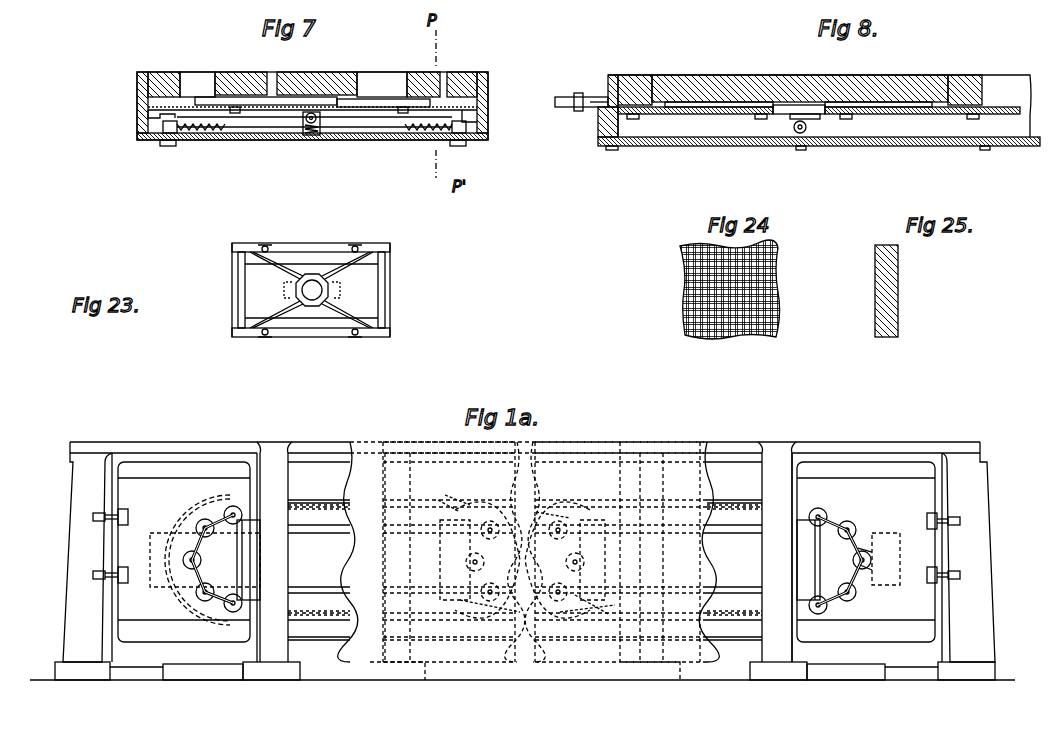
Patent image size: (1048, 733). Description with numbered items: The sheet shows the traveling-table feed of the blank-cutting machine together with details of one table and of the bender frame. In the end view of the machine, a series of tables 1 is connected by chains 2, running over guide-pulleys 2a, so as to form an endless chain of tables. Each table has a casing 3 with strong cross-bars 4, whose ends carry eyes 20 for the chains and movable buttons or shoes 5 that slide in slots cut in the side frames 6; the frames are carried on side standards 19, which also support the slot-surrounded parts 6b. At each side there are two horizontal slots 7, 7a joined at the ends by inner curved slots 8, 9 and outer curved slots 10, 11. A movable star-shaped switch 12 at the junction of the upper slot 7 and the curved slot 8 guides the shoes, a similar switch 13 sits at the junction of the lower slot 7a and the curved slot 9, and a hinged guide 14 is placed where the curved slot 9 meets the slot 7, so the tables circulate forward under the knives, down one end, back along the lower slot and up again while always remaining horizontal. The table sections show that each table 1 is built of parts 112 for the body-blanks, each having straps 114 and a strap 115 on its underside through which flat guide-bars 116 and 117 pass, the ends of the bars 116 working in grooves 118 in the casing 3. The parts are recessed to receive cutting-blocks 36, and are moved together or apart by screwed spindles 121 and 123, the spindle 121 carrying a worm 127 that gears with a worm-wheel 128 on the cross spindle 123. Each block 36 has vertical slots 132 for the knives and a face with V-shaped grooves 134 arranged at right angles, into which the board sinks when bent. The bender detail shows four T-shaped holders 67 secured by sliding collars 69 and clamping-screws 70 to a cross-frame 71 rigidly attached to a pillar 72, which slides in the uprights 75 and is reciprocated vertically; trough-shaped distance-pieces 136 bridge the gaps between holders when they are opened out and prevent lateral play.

In FIG. 7, the table 1 is at (300, 106).
In FIG. 8, the table 1 is at (1004, 75).
In FIG. 1A, the table 1 is at (178, 538).
In FIG. 1A, the chain 2 is at (207, 518).
In FIG. 1A, the guide-pulley 2a is at (234, 506).
In FIG. 7, the casing 3 is at (145, 106).
In FIG. 8, the casing 3 is at (611, 75).
In FIG. 7, the cross-bar 4 is at (170, 146).
In FIG. 8, the cross-bar 4 is at (608, 148).
In FIG. 1A, the cross-bar 4 is at (526, 554).
In FIG. 8, the button or shoe 5 is at (578, 112).
In FIG. 1A, the button or shoe 5 is at (158, 548).
In FIG. 1A, the side frame 6 is at (170, 450).
In FIG. 1A, the slot-surrounded frame part 6b is at (523, 562).
In FIG. 1A, the upper horizontal slot 7 is at (297, 503).
In FIG. 1A, the lower horizontal slot 7a is at (330, 622).
In FIG. 1A, the inner curved slot 8 is at (478, 597).
In FIG. 1A, the inner curved slot 9 is at (612, 510).
In FIG. 1A, the outer curved slot 10 is at (205, 505).
In FIG. 1A, the outer curved slot 11 is at (875, 540).
In FIG. 1A, the star-shaped switch 12 is at (448, 520).
In FIG. 1A, the switch 13 is at (585, 618).
In FIG. 1A, the hinged guide 14 is at (563, 512).
In FIG. 1A, the side standard 19 is at (526, 561).
In FIG. 8, the eye 20 is at (560, 107).
In FIG. 7, the cutting-block 36 is at (290, 80).
In FIG. 8, the cutting-block 36 is at (710, 95).
In FIG. 24, the cutting-block 36 is at (794, 323).
In FIG. 25, the cutting-block 36 is at (890, 326).
In FIG. 23, the bender-holder 67 is at (240, 263).
In FIG. 23, the sliding collar 69 is at (262, 247).
In FIG. 23, the clamping-screw 70 is at (270, 249).
In FIG. 23, the cross-frame 71 is at (262, 311).
In FIG. 23, the pillar 72 is at (313, 300).
In FIG. 23, the upright 75 is at (283, 283).
In FIG. 7, the body-blank table part 112 is at (165, 82).
In FIG. 8, the body-blank table part 112 is at (636, 90).
In FIG. 7, the strap 114 is at (482, 128).
In FIG. 8, the strap 114 is at (633, 120).
In FIG. 7, the strap 115 is at (233, 114).
In FIG. 7, the guide-bar 116 is at (166, 134).
In FIG. 8, the guide-bar 116 is at (700, 114).
In FIG. 7, the guide-bar 117 is at (350, 112).
In FIG. 8, the guide-bar 117 is at (846, 120).
In FIG. 7, the groove 118 is at (480, 114).
In FIG. 8, the groove 118 is at (603, 132).
In FIG. 7, the screwed spindle 121 is at (305, 116).
In FIG. 7, the screwed spindle 123 is at (278, 128).
In FIG. 8, the screwed spindle 123 is at (795, 140).
In FIG. 7, the worm 127 is at (316, 123).
In FIG. 7, the worm-wheel 128 is at (312, 136).
In FIG. 7, the vertical slot 132 is at (265, 75).
In FIG. 24, the V-shaped groove 134 is at (776, 279).
In FIG. 23, the distance-piece 136 is at (316, 250).